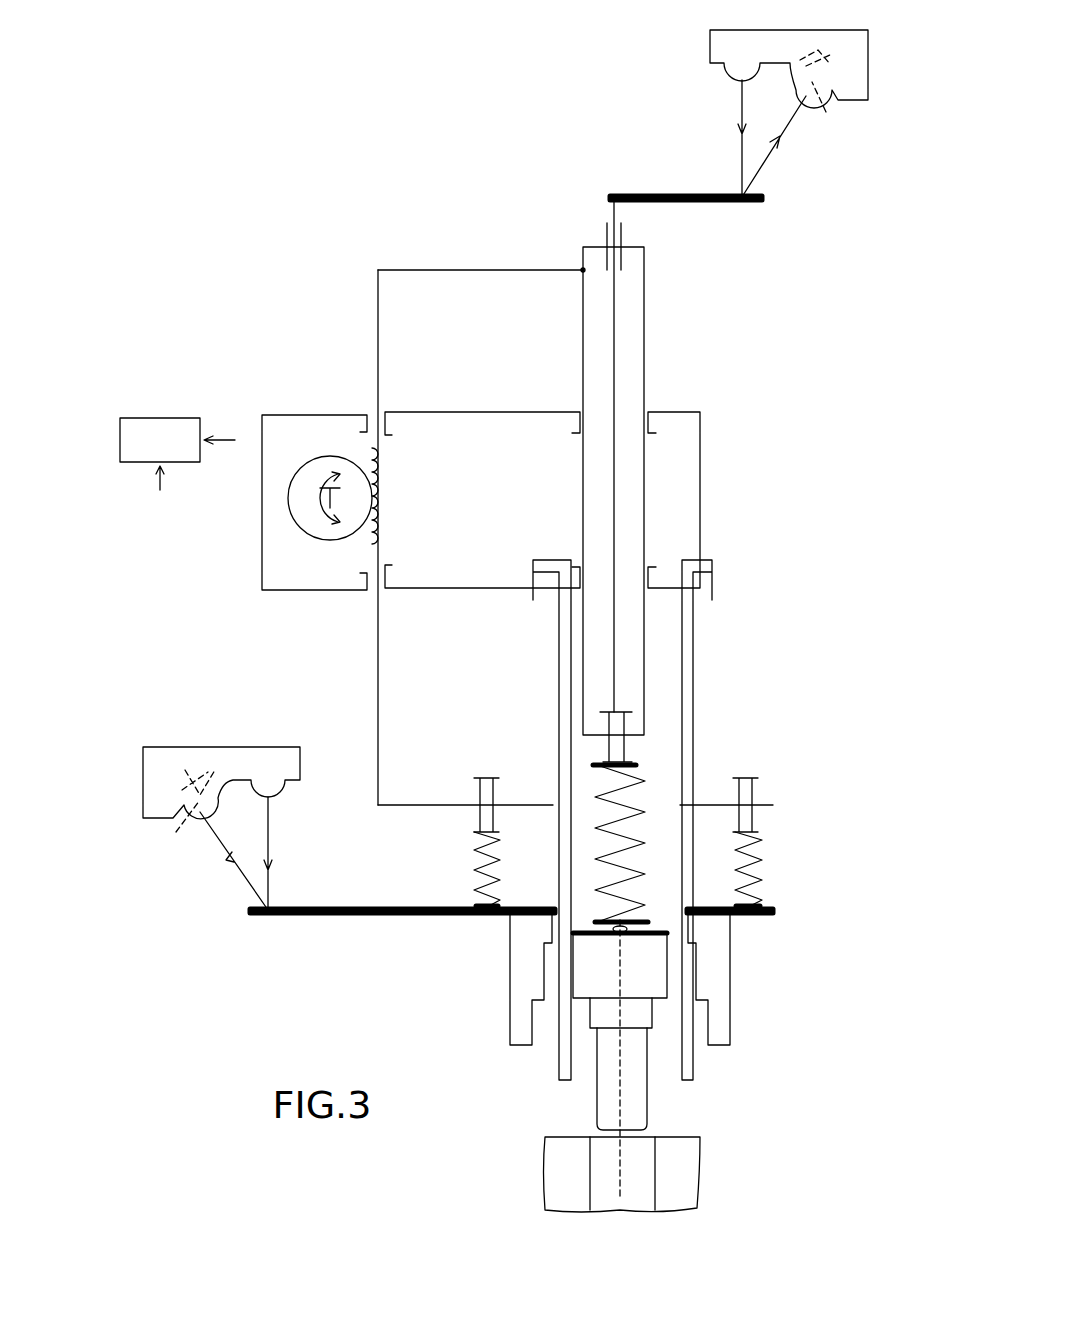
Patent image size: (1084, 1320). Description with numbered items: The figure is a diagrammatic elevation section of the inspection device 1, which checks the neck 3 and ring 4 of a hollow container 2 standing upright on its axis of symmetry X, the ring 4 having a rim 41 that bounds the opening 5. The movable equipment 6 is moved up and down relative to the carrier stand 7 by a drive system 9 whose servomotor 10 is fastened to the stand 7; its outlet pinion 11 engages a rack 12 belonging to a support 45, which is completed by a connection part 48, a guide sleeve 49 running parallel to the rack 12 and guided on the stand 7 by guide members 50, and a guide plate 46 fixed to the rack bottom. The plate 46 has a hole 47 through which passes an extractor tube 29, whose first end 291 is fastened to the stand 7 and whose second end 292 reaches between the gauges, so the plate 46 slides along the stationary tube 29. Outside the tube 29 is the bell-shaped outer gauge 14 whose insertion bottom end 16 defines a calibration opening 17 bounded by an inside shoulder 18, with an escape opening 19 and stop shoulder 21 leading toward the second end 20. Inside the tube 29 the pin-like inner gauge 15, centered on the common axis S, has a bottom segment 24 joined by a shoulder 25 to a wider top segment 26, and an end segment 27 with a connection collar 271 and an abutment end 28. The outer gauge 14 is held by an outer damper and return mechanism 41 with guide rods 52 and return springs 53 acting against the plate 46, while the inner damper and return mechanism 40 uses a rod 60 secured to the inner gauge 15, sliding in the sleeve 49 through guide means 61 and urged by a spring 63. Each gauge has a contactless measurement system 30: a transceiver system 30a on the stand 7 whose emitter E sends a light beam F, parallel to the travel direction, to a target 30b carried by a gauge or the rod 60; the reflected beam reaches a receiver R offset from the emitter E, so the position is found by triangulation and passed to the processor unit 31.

The inspection device 1 is at (714, 396).
The hollow container 2 is at (700, 1197).
The neck 3 is at (575, 1197).
The ring 4 is at (700, 1145).
The rim 41 is at (500, 852).
The opening 5 is at (600, 1175).
The movable equipment 6 is at (372, 770).
The carrier stand 7 is at (701, 505).
The drive system 9 is at (475, 410).
The servomotor 10 is at (265, 592).
The outlet pinion 11 is at (335, 468).
The rack 12 is at (378, 470).
The outer gauge 14 is at (510, 1000).
The inner gauge 15 is at (655, 1065).
The bottom end 16 is at (520, 1046).
The calibration opening 17 is at (710, 1025).
The inside shoulder 18 is at (712, 1005).
The escape opening 19 is at (545, 965).
The second end 20 is at (520, 920).
The stop shoulder 21 is at (530, 938).
The bottom segment 24 is at (580, 1015).
The shoulder 25 is at (650, 1005).
The top segment 26 is at (535, 1010).
The end segment 27 is at (645, 1093).
The connection collar 271 is at (590, 1030).
The abutment end 28 is at (625, 1140).
The extractor tube 29 is at (692, 668).
The first end 291 is at (700, 592).
The second end 292 is at (563, 1072).
The measurement system 30 is at (308, 868).
The transceiver system 30a is at (700, 48).
The target 30b is at (745, 203).
The processor unit 31 is at (148, 450).
The inner damper and return mechanism 40 is at (635, 812).
The support 45 is at (383, 660).
The guide part 46 is at (456, 805).
The hole 47 is at (546, 792).
The connection part 48 is at (494, 268).
The guide sleeve 49 is at (646, 350).
The guide members 50 is at (648, 585).
The guide rod 52 is at (762, 878).
The return spring 53 is at (760, 845).
The rod 60 is at (620, 302).
The guide means 61 is at (604, 240).
The spring 63 is at (633, 762).
The emitter E is at (734, 75).
The receiver R is at (504, 480).
The light beam F is at (740, 156).
The axis of symmetry S is at (620, 960).
The axis of symmetry X is at (622, 1183).